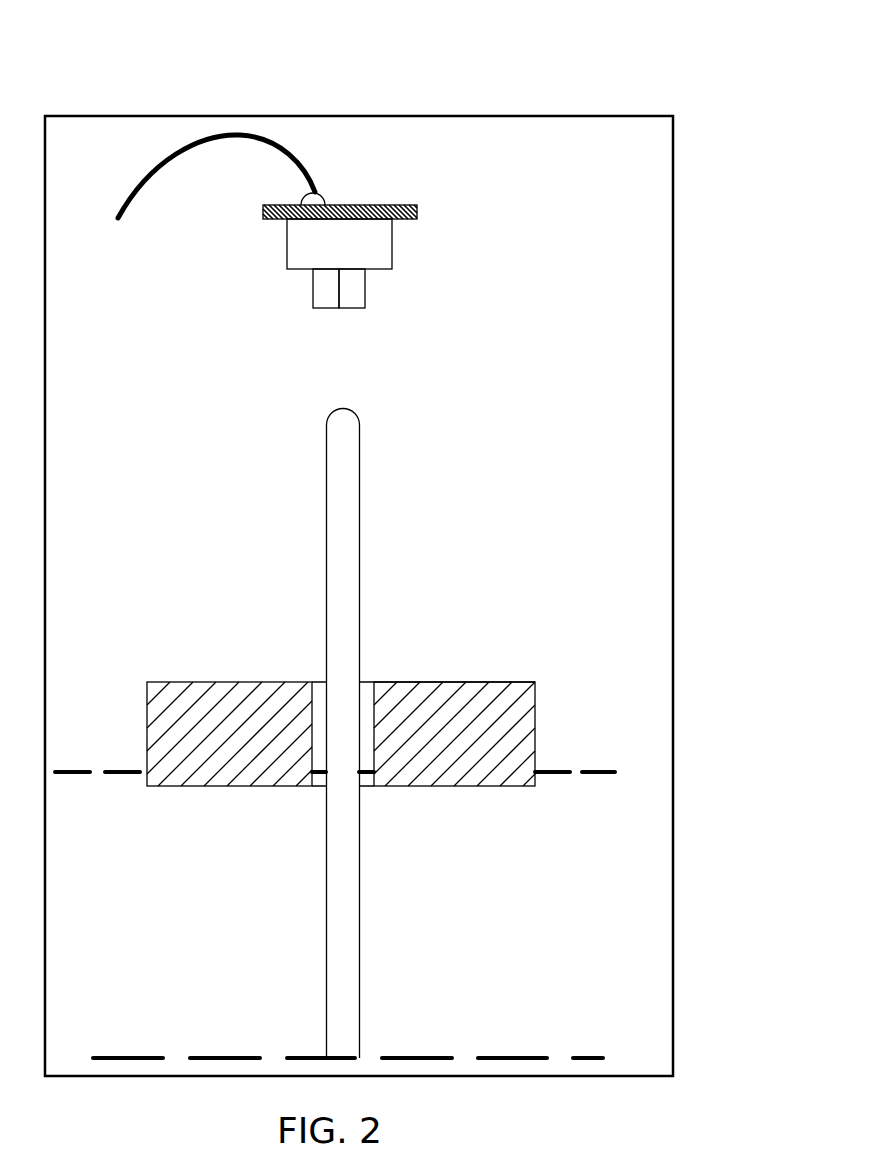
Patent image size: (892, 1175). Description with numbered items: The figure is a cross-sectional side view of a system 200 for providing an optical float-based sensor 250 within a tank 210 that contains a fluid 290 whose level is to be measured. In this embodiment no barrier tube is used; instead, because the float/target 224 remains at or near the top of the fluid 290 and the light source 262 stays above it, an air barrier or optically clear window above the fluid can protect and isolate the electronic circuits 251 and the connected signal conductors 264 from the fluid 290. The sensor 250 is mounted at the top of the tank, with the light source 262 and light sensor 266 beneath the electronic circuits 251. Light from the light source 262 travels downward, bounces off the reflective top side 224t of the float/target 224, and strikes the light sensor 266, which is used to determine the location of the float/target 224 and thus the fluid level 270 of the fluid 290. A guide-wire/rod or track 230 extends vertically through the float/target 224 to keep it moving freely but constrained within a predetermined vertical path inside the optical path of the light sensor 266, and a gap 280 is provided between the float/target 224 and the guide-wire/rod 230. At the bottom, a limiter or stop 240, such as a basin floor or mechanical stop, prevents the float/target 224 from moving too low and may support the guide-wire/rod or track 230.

The system 200 is at (473, 44).
The tank 210 is at (673, 135).
The signal conductors 264 is at (300, 175).
The optical float-based sensor 250 is at (391, 296).
The electronic circuits 251 is at (287, 252).
The light source 262 is at (322, 292).
The light sensor 266 is at (353, 292).
The guide-wire/rod or track 230 is at (350, 602).
The float/target 224 is at (320, 688).
The gap 280 is at (320, 690).
The reflective top side 224t is at (505, 682).
The fluid level 270 is at (588, 770).
The fluid 290 is at (642, 885).
The limiter or stop 240 is at (390, 1055).